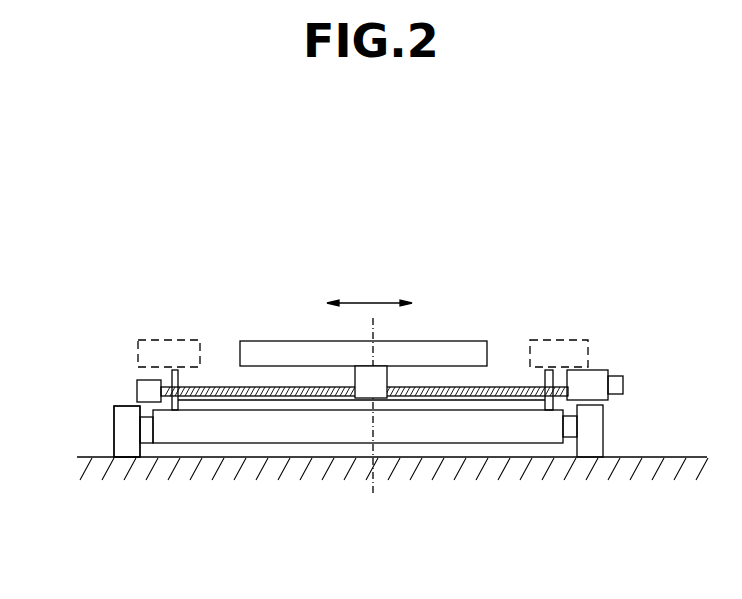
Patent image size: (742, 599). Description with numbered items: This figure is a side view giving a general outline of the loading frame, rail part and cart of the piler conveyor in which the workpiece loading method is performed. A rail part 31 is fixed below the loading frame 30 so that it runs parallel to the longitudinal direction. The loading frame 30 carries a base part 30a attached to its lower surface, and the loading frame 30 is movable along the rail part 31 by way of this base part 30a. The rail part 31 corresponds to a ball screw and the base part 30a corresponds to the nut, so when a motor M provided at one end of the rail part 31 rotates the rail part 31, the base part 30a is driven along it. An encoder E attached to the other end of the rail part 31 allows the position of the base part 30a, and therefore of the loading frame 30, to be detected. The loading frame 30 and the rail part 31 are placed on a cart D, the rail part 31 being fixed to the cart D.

The loading frame 30 is at (457, 350).
The base part 30a is at (380, 388).
The rail part 31 is at (218, 388).
The motor M is at (598, 385).
The encoder E is at (127, 425).
The cart D is at (505, 443).